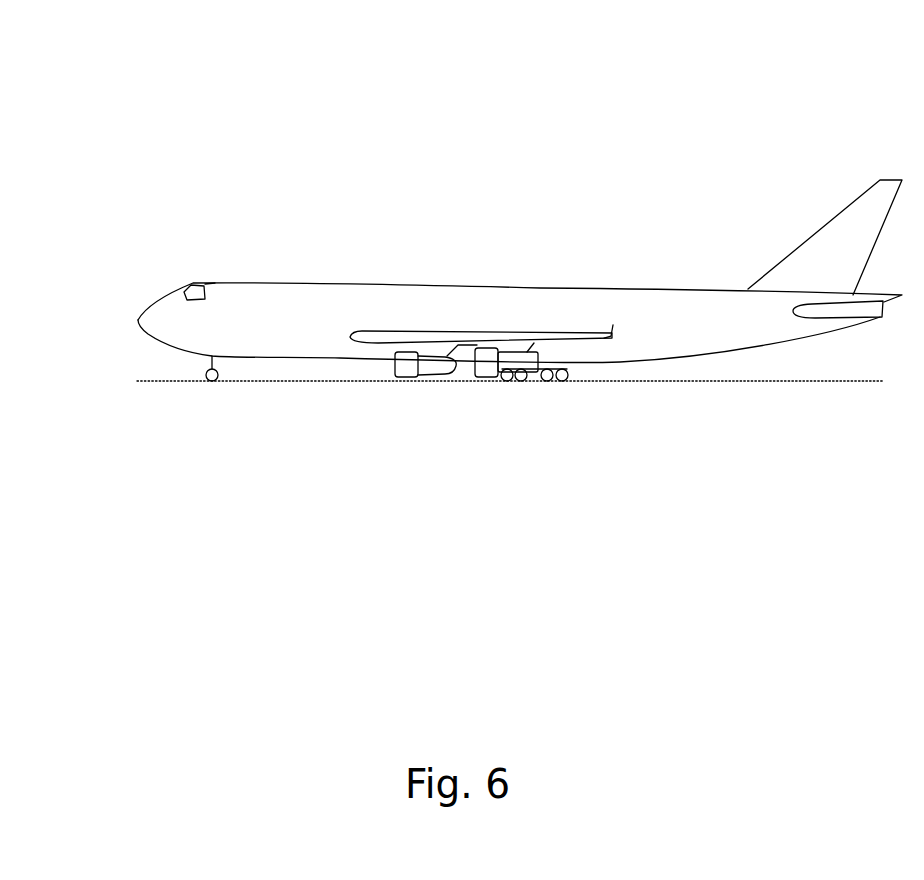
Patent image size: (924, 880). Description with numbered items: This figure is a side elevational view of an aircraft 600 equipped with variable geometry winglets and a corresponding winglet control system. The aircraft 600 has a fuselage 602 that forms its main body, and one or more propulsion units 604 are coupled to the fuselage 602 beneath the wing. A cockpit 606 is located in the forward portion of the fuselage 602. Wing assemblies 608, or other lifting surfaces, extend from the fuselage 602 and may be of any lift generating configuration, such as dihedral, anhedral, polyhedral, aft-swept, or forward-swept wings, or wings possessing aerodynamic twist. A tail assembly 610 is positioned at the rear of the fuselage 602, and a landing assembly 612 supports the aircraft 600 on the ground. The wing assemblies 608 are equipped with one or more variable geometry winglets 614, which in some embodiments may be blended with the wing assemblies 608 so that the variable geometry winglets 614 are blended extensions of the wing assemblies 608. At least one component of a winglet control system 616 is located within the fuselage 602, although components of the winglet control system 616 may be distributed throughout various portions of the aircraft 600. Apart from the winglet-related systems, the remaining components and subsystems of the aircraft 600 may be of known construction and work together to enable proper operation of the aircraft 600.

The aircraft 600 is at (235, 105).
The fuselage 602 is at (540, 290).
The propulsion units 604 is at (405, 360).
The cockpit 606 is at (185, 287).
The wing assemblies 608 is at (377, 333).
The tail assembly 610 is at (822, 250).
The landing assembly 612 is at (527, 380).
The variable geometry winglets 614 is at (613, 325).
The winglet control system 616 is at (208, 297).